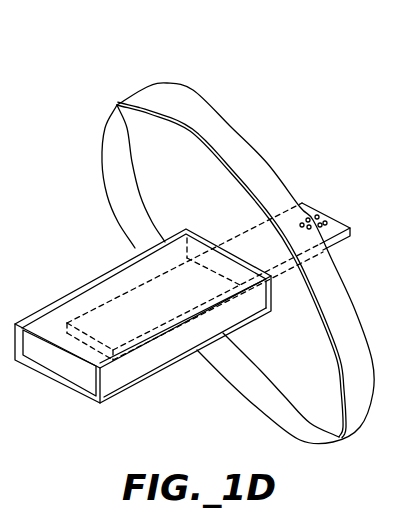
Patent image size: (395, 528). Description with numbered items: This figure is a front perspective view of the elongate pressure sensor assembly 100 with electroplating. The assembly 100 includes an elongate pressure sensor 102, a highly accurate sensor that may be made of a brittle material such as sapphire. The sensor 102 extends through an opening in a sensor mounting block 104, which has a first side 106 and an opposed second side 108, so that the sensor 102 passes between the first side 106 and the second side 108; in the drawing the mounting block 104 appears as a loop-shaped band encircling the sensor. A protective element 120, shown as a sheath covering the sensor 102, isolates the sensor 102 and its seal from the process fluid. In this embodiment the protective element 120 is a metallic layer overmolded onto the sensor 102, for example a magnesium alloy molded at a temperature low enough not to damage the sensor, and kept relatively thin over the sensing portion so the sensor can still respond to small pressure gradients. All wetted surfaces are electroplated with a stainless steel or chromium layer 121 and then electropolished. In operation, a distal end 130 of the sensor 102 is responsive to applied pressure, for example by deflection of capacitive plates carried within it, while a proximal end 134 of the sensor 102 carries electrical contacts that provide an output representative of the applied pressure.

The pressure sensor assembly 100 is at (91, 63).
The elongate pressure sensor 102 is at (143, 348).
The sensor mounting block 104 is at (168, 87).
The first side 106 is at (132, 117).
The second side 108 is at (244, 132).
The protective element 120 is at (93, 300).
The stainless steel or chromium layer 121 is at (77, 390).
The distal end 130 is at (115, 263).
The proximal end 134 is at (302, 203).